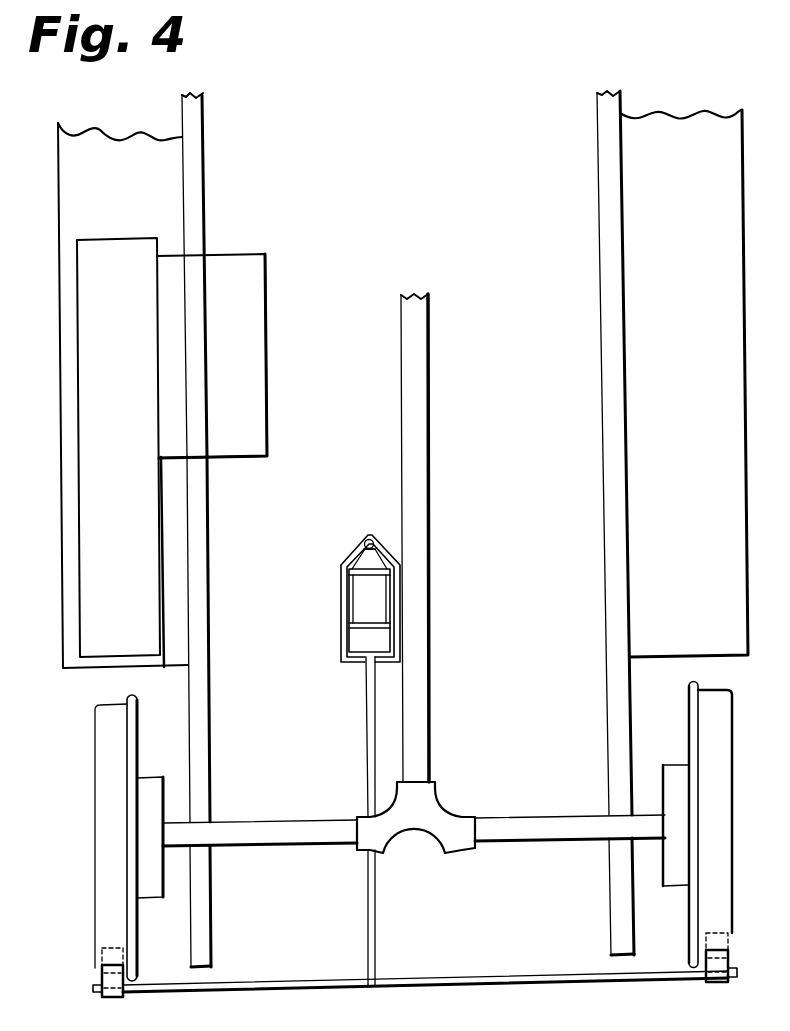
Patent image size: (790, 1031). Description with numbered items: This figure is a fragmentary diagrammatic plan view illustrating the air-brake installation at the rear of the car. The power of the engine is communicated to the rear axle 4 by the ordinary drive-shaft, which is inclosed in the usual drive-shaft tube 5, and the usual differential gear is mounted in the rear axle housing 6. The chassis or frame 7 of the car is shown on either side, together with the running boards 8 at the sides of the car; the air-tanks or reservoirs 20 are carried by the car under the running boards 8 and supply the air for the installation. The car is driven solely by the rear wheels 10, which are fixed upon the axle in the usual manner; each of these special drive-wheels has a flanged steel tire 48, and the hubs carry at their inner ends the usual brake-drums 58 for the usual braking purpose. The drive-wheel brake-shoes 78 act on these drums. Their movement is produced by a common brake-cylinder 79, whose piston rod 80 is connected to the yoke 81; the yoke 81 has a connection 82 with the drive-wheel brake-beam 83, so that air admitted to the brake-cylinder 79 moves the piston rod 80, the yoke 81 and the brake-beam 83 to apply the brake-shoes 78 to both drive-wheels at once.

The rear axle 4 is at (253, 830).
The drive-shaft tube 5 is at (418, 492).
The rear axle housing 6 is at (430, 818).
The chassis or frame 7 is at (195, 192).
The running boards 8 is at (403, 389).
The rear wheels 10 is at (105, 780).
The air-tanks or reservoirs 20 is at (172, 447).
The flanged steel tire 48 is at (133, 710).
The brake-drums 58 is at (148, 890).
The drive-wheel brake-shoes 78 is at (100, 978).
The brake-cylinder 79 is at (362, 594).
The piston rod 80 is at (366, 540).
The yoke 81 is at (345, 559).
The connection 82 is at (366, 706).
The drive-wheel brake-beam 83 is at (481, 978).